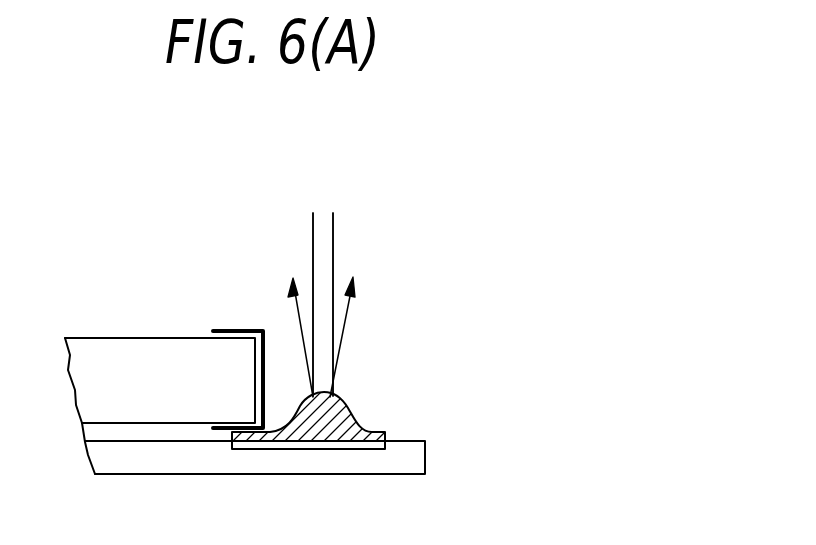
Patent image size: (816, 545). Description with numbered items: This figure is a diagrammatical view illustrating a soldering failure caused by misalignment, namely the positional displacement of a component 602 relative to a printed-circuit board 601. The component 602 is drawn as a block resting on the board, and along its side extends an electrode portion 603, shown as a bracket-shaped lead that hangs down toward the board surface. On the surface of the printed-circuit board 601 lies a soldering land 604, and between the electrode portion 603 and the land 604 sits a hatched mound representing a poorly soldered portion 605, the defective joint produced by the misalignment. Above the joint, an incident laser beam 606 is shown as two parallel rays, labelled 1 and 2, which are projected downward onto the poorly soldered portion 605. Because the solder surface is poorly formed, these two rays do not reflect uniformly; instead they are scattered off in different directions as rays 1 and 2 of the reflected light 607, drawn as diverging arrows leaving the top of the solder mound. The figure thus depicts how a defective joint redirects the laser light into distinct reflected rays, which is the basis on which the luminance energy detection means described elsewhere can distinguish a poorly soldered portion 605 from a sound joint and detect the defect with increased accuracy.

The printed-circuit board 601 is at (418, 453).
The component 602 is at (118, 347).
The electrode portion 603 is at (225, 330).
The soldering land 604 is at (347, 443).
The poorly soldered portion 605 is at (335, 420).
The incident laser beam 606 is at (373, 173).
The rays of reflected light 607 is at (300, 317).
The first incident ray and first reflected ray 1 is at (345, 287).
The second incident ray and second reflected ray 2 is at (302, 287).